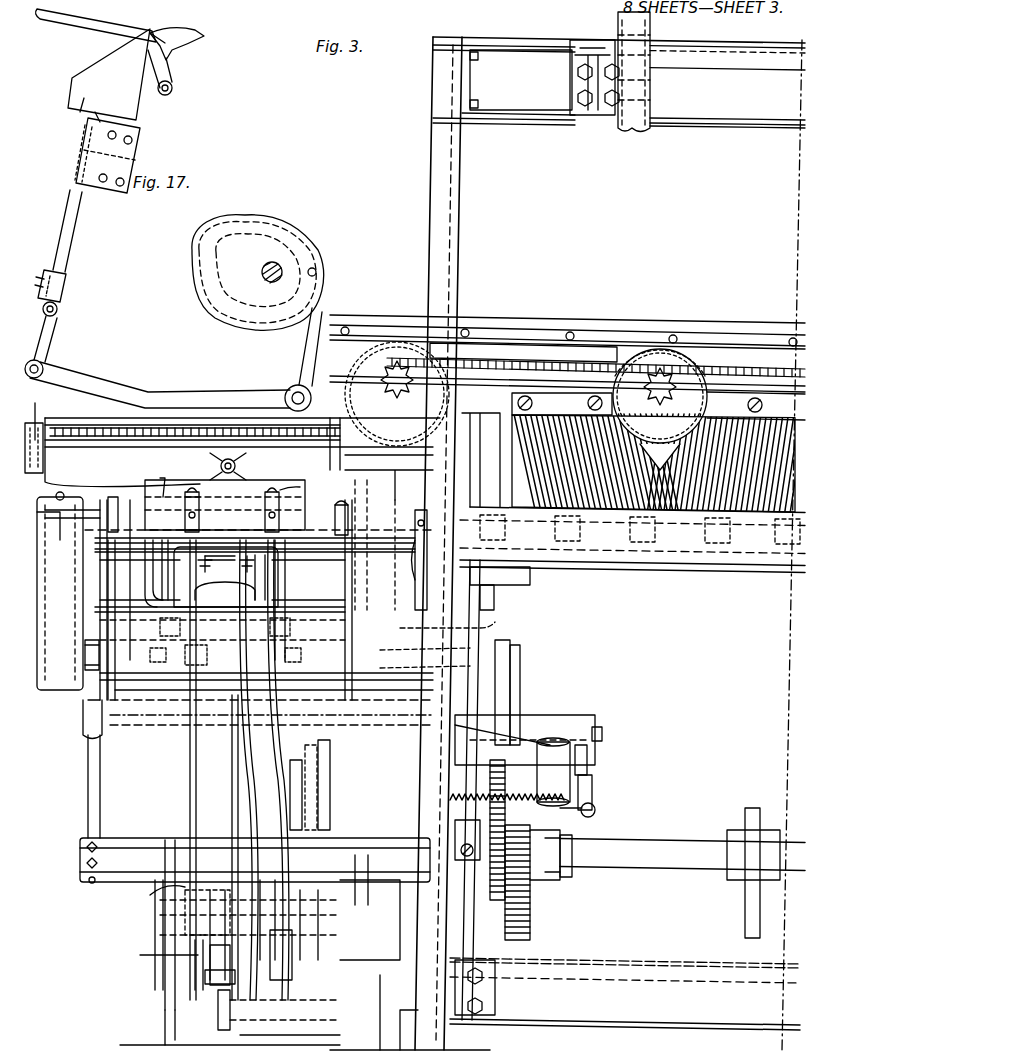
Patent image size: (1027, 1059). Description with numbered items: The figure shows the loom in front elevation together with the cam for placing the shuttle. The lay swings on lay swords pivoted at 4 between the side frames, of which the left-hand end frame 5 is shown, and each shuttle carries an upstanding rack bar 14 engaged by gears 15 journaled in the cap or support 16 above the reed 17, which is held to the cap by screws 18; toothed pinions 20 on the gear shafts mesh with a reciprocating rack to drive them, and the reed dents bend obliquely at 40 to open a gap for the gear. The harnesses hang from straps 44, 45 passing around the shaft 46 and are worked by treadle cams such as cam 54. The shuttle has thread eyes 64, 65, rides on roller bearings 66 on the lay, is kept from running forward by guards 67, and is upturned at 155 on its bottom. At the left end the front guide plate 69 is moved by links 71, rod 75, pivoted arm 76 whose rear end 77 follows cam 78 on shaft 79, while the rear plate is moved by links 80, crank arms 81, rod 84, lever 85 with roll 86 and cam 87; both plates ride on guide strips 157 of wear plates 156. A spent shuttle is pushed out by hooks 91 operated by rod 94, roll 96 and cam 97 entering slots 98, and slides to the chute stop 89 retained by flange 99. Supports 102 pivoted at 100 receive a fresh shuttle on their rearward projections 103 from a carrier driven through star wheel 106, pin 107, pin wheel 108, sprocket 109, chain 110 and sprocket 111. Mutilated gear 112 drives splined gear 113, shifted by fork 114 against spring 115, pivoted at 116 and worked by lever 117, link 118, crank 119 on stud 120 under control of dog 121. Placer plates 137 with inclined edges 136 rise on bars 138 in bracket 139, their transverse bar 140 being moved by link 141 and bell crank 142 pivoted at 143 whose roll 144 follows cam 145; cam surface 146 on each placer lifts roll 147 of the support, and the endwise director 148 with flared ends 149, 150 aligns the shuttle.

In FIG. 3, the pivot 4 is at (660, 450).
In FIG. 3, the side frame 5 is at (432, 190).
In FIG. 3, the rack bar 14 is at (84, 440).
In FIG. 3, the gear 15 is at (700, 405).
In FIG. 3, the cap or support 16 is at (748, 328).
In FIG. 3, the reed 17 is at (512, 446).
In FIG. 3, the screws 18 is at (586, 403).
In FIG. 3, the toothed pinion 20 is at (397, 382).
In FIG. 3, the gap forming deflector 40 is at (776, 407).
In FIG. 3, the strap 44 is at (615, 128).
In FIG. 3, the strap 45 is at (675, 105).
In FIG. 3, the shaft 46 is at (758, 58).
In FIG. 3, the cam 54 is at (752, 808).
In FIG. 3, the eye 64 is at (379, 475).
In FIG. 3, the eye 65 is at (238, 466).
In FIG. 3, the roller bearings 66 is at (60, 492).
In FIG. 3, the guides or guards 67 is at (712, 508).
In FIG. 3, the front guide plate 69 is at (296, 486).
In FIG. 3, the links 71 is at (210, 568).
In FIG. 3, the rod 75 is at (240, 790).
In FIG. 3, the intermediately pivoted arm 76 is at (260, 953).
In FIG. 3, the rear end 77 is at (285, 962).
In FIG. 3, the cam 78 is at (280, 780).
In FIG. 17, the shaft 79 is at (262, 272).
In FIG. 3, the links 80 is at (160, 629).
In FIG. 3, the crank arms 81 is at (166, 657).
In FIG. 3, the rod 84 is at (190, 783).
In FIG. 3, the intermediately pivoted lever 85 is at (190, 660).
In FIG. 3, the roll 86 is at (165, 895).
In FIG. 3, the cam 87 is at (232, 770).
In FIG. 3, the stop 89 is at (85, 653).
In FIG. 3, the hooks 91 is at (100, 512).
In FIG. 3, the actuating rod 94 is at (280, 700).
In FIG. 3, the cam roll 96 is at (310, 783).
In FIG. 3, the cam 97 is at (325, 748).
In FIG. 3, the slots or openings 98 is at (122, 513).
In FIG. 3, the end flange 99 is at (38, 600).
In FIG. 17, the pivot 100 is at (172, 92).
In FIG. 17, the supports 102 is at (104, 18).
In FIG. 3, the supports 102 is at (114, 497).
In FIG. 17, the rearward projection 103 is at (197, 37).
In FIG. 3, the star wheel 106 is at (415, 580).
In FIG. 3, the pin 107 is at (440, 650).
In FIG. 3, the pin wheel 108 is at (475, 628).
In FIG. 3, the sprocket wheel 109 is at (440, 668).
In FIG. 3, the chain 110 is at (430, 805).
In FIG. 3, the sprocket wheel 111 is at (440, 875).
In FIG. 3, the mutilated driving gear 112 is at (490, 770).
In FIG. 3, the gear 113 is at (530, 898).
In FIG. 3, the fork 114 is at (575, 890).
In FIG. 3, the spring 115 is at (465, 798).
In FIG. 3, the pivot 116 is at (590, 725).
In FIG. 3, the lever 117 is at (596, 808).
In FIG. 3, the link 118 is at (595, 780).
In FIG. 3, the crank 119 is at (588, 752).
In FIG. 3, the stud 120 is at (602, 733).
In FIG. 3, the dog 121 is at (532, 702).
In FIG. 17, the front inclined edges 136 is at (98, 62).
In FIG. 17, the shuttle placer 137 is at (72, 110).
In FIG. 17, the bars 138 is at (72, 240).
In FIG. 3, the bars 138 is at (98, 777).
In FIG. 17, the stationary bracket 139 is at (80, 157).
In FIG. 3, the stationary bracket 139 is at (85, 715).
In FIG. 17, the transverse bar 140 is at (65, 298).
In FIG. 3, the transverse bar 140 is at (120, 855).
In FIG. 17, the link 141 is at (48, 340).
In FIG. 3, the link 141 is at (195, 945).
In FIG. 17, the bell crank lever 142 is at (178, 398).
In FIG. 3, the bell crank lever 142 is at (240, 1028).
In FIG. 17, the pivot 143 is at (300, 385).
In FIG. 3, the pivot 143 is at (215, 1005).
In FIG. 17, the cam roll 144 is at (318, 272).
In FIG. 17, the cam 145 is at (273, 222).
In FIG. 3, the cam 145 is at (360, 912).
In FIG. 17, the cam surface 146 is at (170, 64).
In FIG. 17, the stud or roll 147 is at (160, 28).
In FIG. 17, the endwise director or guide 148 is at (57, 424).
In FIG. 17, the flared end 149 is at (35, 411).
In FIG. 3, the flared end 150 is at (485, 471).
In FIG. 3, the upturned ends 155 is at (65, 540).
In FIG. 3, the metal plates 156 is at (163, 494).
In FIG. 3, the guide strips 157 is at (190, 508).